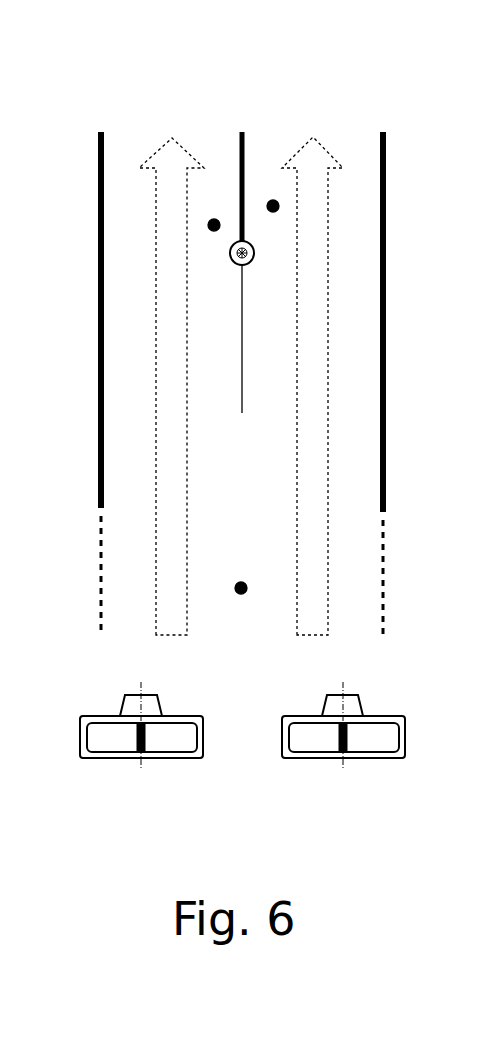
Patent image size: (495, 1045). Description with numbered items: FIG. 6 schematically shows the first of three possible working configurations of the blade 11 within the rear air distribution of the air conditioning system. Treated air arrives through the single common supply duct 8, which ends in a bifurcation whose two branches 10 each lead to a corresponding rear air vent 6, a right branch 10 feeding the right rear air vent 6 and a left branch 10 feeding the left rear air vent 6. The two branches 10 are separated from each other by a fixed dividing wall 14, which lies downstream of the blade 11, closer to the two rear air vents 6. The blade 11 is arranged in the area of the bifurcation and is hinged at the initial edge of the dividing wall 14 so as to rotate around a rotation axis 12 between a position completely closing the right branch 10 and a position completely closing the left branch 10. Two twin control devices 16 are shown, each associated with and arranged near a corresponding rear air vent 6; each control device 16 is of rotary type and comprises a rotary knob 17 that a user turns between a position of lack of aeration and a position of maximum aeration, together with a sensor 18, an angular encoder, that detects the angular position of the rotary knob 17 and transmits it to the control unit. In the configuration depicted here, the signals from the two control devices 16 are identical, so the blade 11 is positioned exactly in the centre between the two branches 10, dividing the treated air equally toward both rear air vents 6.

The rear air vent 6 is at (166, 104).
The common supply duct 8 is at (247, 588).
The branch 10 is at (208, 225).
The blade 11 is at (243, 382).
The rotation axis 12 is at (254, 253).
The dividing wall 14 is at (245, 147).
The control device 16 is at (288, 759).
The rotary knob 17 is at (376, 737).
The sensor 18 is at (355, 711).